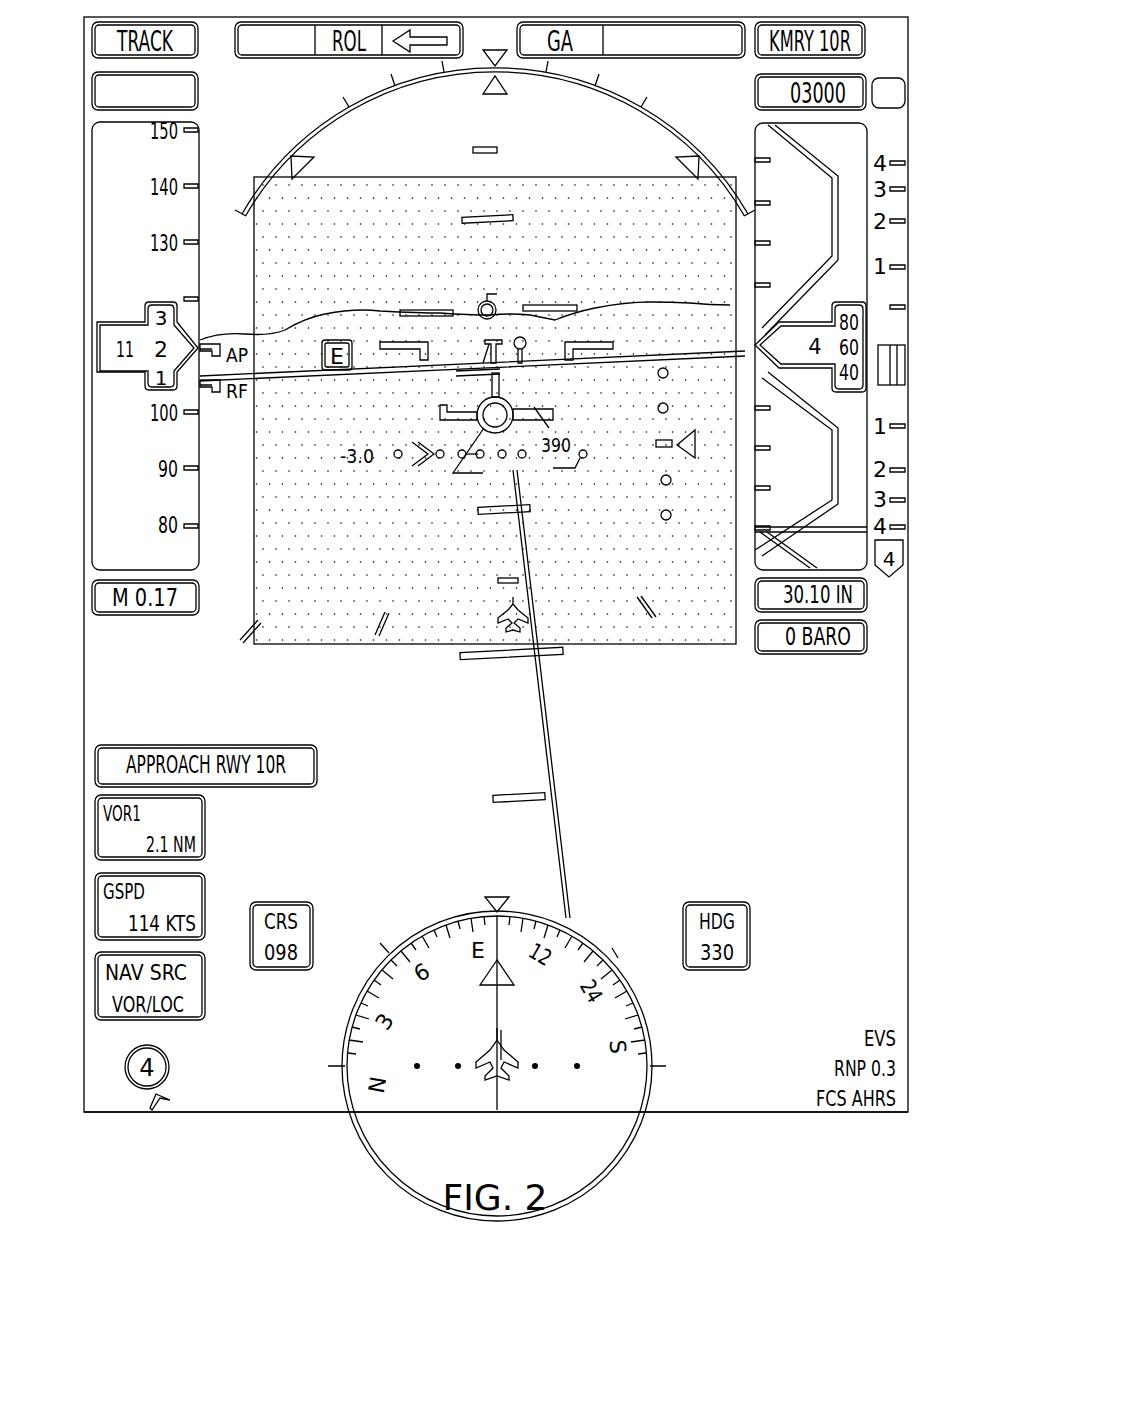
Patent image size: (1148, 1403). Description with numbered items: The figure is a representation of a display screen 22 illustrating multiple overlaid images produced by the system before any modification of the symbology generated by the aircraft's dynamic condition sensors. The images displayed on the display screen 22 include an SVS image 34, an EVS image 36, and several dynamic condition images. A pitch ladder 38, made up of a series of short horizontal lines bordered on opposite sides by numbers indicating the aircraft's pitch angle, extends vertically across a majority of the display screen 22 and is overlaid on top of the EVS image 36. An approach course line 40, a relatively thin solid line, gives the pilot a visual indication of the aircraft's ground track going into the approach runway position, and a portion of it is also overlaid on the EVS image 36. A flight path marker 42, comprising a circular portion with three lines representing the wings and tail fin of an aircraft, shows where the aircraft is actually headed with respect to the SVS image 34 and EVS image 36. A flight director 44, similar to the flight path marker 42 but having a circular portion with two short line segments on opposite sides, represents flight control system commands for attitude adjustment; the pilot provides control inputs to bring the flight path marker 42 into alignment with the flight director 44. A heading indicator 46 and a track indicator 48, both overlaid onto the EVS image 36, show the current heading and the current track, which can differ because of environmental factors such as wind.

The display screen 22 is at (200, 1112).
The SVS image 34 is at (908, 898).
The EVS image 36 is at (672, 645).
The pitch ladder 38 is at (505, 217).
The approach course line 40 is at (546, 735).
The flight path marker 42 is at (520, 420).
The flight director 44 is at (430, 310).
The heading indicator 46 is at (544, 337).
The track indicator 48 is at (488, 347).